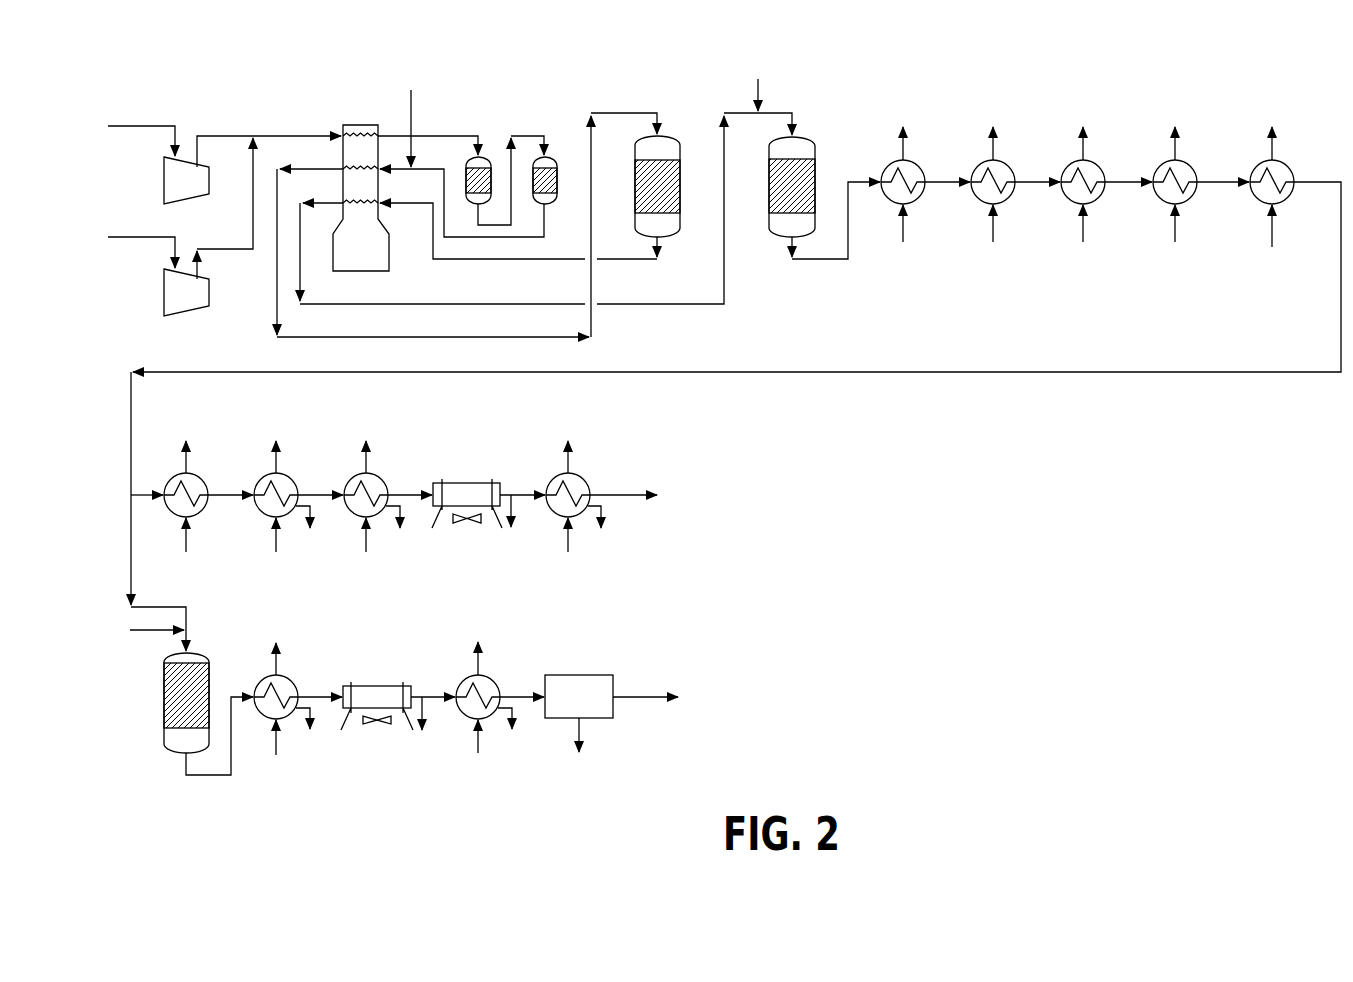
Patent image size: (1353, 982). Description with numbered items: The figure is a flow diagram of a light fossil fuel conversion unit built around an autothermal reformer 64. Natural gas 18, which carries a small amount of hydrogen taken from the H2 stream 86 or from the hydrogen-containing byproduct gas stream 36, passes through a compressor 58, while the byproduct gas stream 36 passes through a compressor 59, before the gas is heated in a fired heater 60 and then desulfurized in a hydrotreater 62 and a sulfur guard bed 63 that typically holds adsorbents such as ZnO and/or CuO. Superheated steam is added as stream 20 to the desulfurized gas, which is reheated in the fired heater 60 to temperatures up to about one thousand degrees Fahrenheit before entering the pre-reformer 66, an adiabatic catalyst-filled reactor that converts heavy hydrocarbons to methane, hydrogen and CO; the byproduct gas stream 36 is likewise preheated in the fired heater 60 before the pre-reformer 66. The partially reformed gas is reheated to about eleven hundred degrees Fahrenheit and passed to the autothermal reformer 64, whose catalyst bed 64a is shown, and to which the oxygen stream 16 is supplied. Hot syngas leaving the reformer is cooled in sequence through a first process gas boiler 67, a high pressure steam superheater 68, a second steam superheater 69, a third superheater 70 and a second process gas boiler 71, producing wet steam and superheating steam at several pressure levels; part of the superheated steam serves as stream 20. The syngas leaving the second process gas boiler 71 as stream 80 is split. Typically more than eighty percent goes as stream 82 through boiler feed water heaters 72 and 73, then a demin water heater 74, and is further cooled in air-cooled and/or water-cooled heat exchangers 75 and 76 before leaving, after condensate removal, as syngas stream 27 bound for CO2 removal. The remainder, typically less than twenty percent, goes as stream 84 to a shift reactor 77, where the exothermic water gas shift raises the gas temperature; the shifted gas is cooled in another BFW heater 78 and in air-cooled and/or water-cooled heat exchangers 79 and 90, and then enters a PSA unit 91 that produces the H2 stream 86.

The oxygen stream 16 is at (752, 80).
The natural gas 18 is at (141, 130).
The superheated steam stream 20 is at (409, 114).
The syngas stream 27 is at (638, 495).
The hydrogen-containing byproduct gas stream 36 is at (141, 243).
The compressor 58 is at (252, 170).
The compressor 59 is at (208, 227).
The fired heater 60 is at (534, 225).
The hydrotreater 62 is at (444, 159).
The sulfur guard bed 63 is at (468, 165).
The autothermal reformer 64 is at (808, 198).
The catalyst bed 64a is at (792, 177).
The pre-reformer 66 is at (530, 225).
The first process gas boiler 67 is at (925, 184).
The high pressure steam superheater 68 is at (1015, 184).
The second steam superheater 69 is at (1106, 184).
The third superheater 70 is at (1201, 184).
The second process gas boiler 71 is at (1279, 187).
The boiler feed water heater 72 is at (208, 496).
The boiler feed water heater 73 is at (298, 496).
The demin water heater 74 is at (388, 496).
The air cooled and/or water cooled heat exchanger 75 is at (488, 491).
The air cooled and/or water cooled heat exchanger 76 is at (574, 496).
The shift reactor 77 is at (191, 691).
The BFW heater 78 is at (298, 699).
The air-cooled and/or water-cooled heat exchanger 79 is at (398, 698).
The stream 80 is at (737, 277).
The stream 82 is at (147, 485).
The stream 84 is at (118, 488).
The H2 stream 86 is at (645, 686).
The air-cooled and/or water-cooled heat exchanger 90 is at (500, 697).
The PSA unit 91 is at (579, 704).